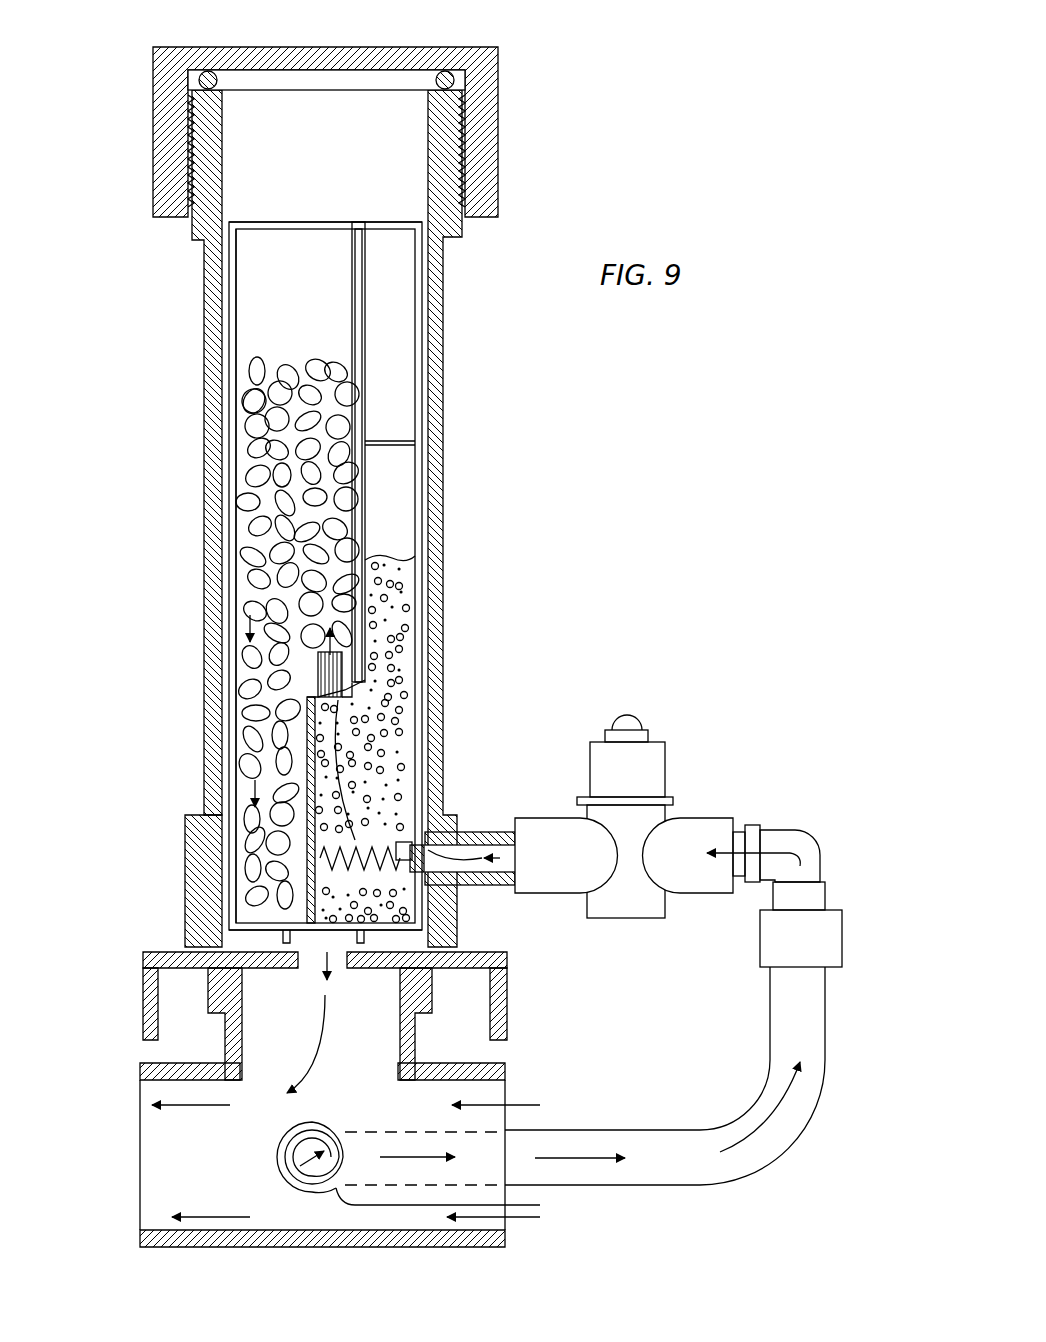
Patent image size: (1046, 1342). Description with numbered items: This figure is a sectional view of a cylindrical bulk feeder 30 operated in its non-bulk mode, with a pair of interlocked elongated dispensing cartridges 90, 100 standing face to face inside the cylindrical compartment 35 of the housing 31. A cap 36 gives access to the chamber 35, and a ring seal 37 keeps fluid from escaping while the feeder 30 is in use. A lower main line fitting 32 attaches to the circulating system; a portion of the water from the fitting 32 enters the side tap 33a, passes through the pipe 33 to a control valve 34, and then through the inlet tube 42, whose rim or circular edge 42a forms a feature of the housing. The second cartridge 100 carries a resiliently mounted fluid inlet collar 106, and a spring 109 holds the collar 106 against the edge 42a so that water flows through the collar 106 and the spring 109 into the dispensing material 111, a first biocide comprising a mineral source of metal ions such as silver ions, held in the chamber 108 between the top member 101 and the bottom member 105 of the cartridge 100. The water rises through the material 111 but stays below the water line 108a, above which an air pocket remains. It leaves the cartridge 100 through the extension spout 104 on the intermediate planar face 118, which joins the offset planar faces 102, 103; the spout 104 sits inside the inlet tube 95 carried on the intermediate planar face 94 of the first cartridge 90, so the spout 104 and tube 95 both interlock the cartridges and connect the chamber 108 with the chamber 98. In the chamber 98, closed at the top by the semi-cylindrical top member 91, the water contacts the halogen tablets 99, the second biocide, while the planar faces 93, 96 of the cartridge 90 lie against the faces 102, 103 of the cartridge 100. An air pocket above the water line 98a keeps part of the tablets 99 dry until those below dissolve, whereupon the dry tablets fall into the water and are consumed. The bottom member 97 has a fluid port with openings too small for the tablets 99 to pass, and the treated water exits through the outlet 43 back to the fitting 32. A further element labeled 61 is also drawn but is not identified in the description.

The bulk feeder 30 is at (538, 110).
The cylindrical housing 31 is at (443, 378).
The main line fitting 32 is at (505, 1062).
The pipe 33 is at (645, 1128).
The side tap 33a is at (316, 1168).
The control valve 34 is at (665, 745).
The chamber 35 is at (345, 171).
The cap 36 is at (160, 133).
The ring seal 37 is at (203, 76).
The inlet tube 42 is at (470, 825).
The rim of inlet tube 42a is at (470, 845).
The outlet 43 is at (275, 982).
The pellet 61 is at (252, 445).
The first interlocking dispensing cartridge 90 is at (236, 300).
The top semi-cylindrical member 91 is at (282, 221).
The planar face 93 is at (248, 372).
The intermediate planar face 94 is at (318, 700).
The inlet tube 95 is at (310, 745).
The planar face 96 is at (262, 817).
The bottom member 97 is at (245, 938).
The chamber 98 is at (315, 331).
The water line 98a is at (237, 505).
The halogen tablets 99 is at (255, 422).
The second interlocking dispensing cartridge 100 is at (368, 333).
The top member 101 is at (405, 222).
The planar face 102 is at (345, 298).
The planar face 103 is at (305, 745).
The extension spout 104 is at (335, 655).
The bottom member 105 is at (457, 948).
The fluid inlet collar 106 is at (458, 884).
The chamber 108 is at (410, 376).
The water line 108a is at (390, 443).
The spring 109 is at (375, 810).
The dispensing material 111 is at (380, 558).
The intermediate planar face 118 is at (270, 648).